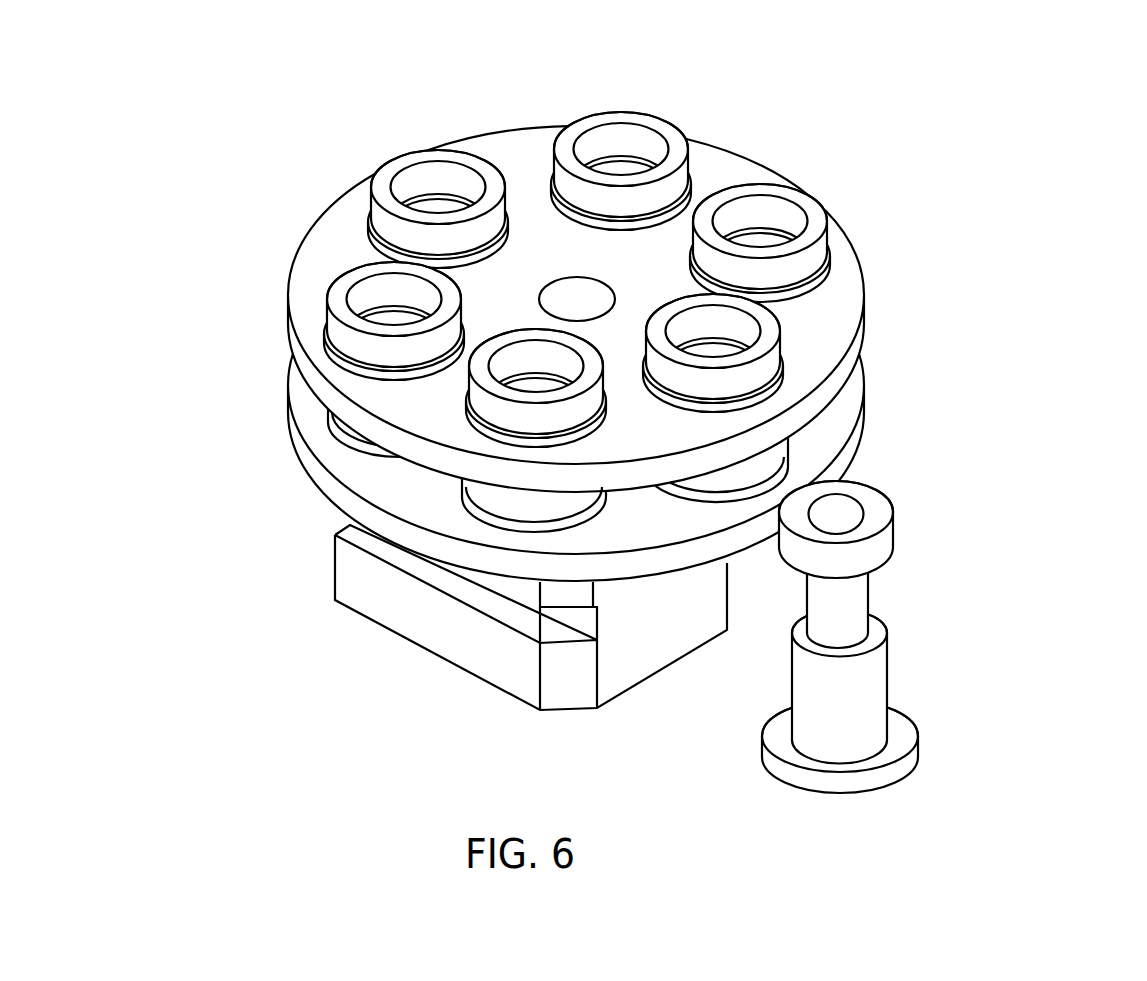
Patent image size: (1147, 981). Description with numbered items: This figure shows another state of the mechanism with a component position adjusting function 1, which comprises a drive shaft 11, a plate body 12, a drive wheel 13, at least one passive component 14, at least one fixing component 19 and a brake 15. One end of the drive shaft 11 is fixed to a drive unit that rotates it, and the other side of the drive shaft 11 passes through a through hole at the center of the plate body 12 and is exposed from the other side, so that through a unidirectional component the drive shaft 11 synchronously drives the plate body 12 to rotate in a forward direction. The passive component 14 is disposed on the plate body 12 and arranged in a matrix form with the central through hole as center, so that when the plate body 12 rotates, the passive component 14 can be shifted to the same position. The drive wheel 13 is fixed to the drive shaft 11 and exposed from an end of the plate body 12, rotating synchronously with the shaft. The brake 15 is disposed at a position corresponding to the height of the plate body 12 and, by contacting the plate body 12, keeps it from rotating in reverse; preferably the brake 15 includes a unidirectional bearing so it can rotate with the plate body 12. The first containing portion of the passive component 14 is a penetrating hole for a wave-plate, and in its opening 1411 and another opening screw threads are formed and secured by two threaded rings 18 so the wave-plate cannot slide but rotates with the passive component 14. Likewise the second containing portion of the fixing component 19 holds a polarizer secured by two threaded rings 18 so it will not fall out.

The mechanism with a component position adjusting function 1 is at (165, 63).
The drive shaft 11 is at (583, 305).
The plate body 12 is at (835, 423).
The drive wheel 13 is at (597, 260).
The passive component 14 is at (530, 512).
The brake 15 is at (868, 498).
The threaded ring 18 is at (413, 215).
The fixing component 19 is at (813, 253).
The opening 1411 is at (437, 205).